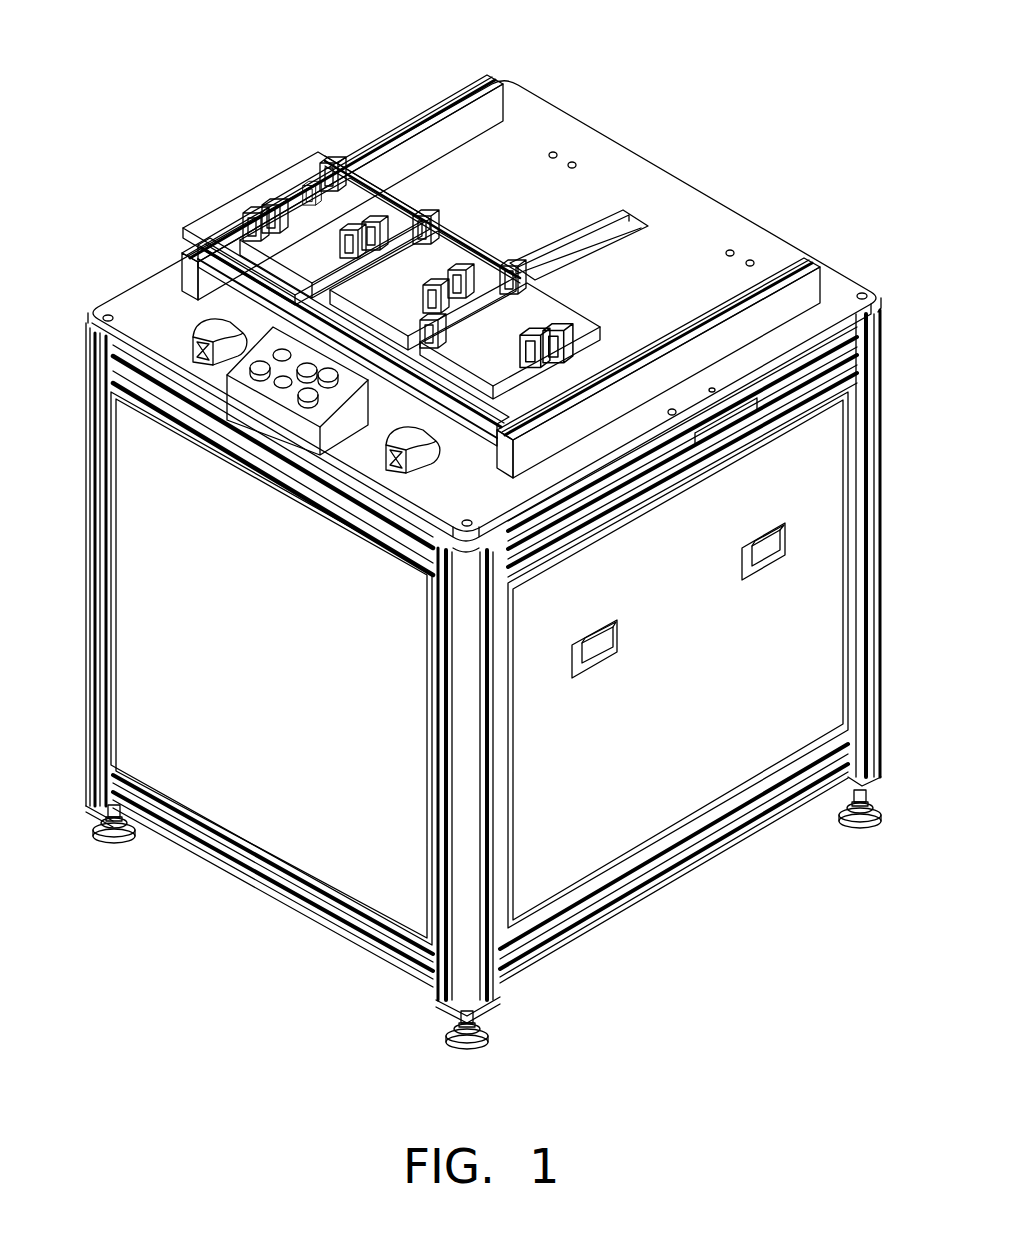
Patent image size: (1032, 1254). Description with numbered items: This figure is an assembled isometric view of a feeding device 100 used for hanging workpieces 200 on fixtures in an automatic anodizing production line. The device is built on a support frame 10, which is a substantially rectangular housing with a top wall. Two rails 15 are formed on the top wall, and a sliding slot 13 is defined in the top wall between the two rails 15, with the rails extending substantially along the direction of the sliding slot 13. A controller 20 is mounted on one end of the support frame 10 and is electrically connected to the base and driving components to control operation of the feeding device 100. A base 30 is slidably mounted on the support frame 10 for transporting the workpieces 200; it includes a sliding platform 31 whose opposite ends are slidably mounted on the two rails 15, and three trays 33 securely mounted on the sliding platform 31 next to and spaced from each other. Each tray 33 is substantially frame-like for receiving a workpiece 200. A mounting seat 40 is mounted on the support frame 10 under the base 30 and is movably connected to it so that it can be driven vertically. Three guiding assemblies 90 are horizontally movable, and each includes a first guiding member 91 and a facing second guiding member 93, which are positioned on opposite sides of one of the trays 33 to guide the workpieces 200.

The feeding device 100 is at (697, 68).
The support frame 10 is at (840, 298).
The sliding slot 13 is at (626, 222).
The rails 15 is at (808, 295).
The controller 20 is at (255, 405).
The base 30 is at (110, 207).
The sliding platform 31 is at (206, 232).
The trays 33 is at (238, 240).
The mounting seat 40 is at (210, 303).
The guiding assemblies 90 is at (419, 56).
The first guiding member 91 is at (348, 156).
The second guiding member 93 is at (424, 210).
The workpieces 200 is at (310, 233).